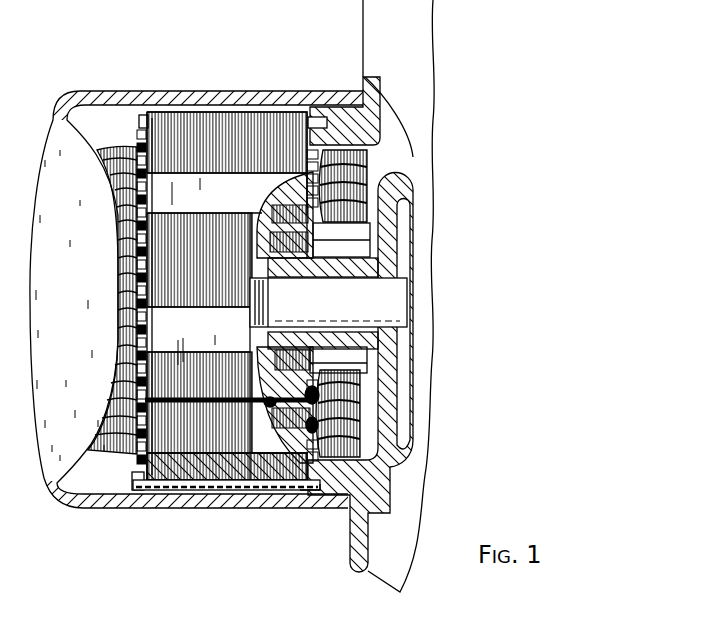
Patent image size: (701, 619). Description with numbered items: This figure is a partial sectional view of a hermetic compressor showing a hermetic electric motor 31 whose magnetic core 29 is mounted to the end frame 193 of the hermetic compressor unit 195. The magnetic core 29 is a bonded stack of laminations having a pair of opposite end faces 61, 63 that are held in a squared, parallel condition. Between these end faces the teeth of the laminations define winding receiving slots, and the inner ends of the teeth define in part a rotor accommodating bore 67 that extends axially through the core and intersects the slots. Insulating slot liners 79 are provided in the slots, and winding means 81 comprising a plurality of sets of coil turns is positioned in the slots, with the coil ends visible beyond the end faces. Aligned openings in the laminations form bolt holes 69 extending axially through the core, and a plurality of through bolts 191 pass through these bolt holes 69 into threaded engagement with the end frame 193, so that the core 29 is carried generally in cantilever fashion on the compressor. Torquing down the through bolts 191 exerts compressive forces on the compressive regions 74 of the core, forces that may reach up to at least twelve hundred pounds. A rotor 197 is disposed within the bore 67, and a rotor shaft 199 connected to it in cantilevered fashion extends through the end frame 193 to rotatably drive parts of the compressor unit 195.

The magnetic core 29 is at (242, 107).
The electric motor 31 is at (369, 173).
The end face 61 is at (150, 137).
The end face 63 is at (298, 112).
The rotor accommodating bore 67 is at (286, 408).
The bolt holes 69 is at (197, 489).
The compressive regions 74 is at (190, 455).
The insulating slot liners 79 is at (147, 202).
The winding means 81 is at (107, 142).
The through bolts 191 is at (134, 121).
The end frame 193 is at (427, 30).
The hermetic compressor unit 195 is at (459, 81).
The rotor 197 is at (258, 228).
The rotor shaft 199 is at (393, 298).